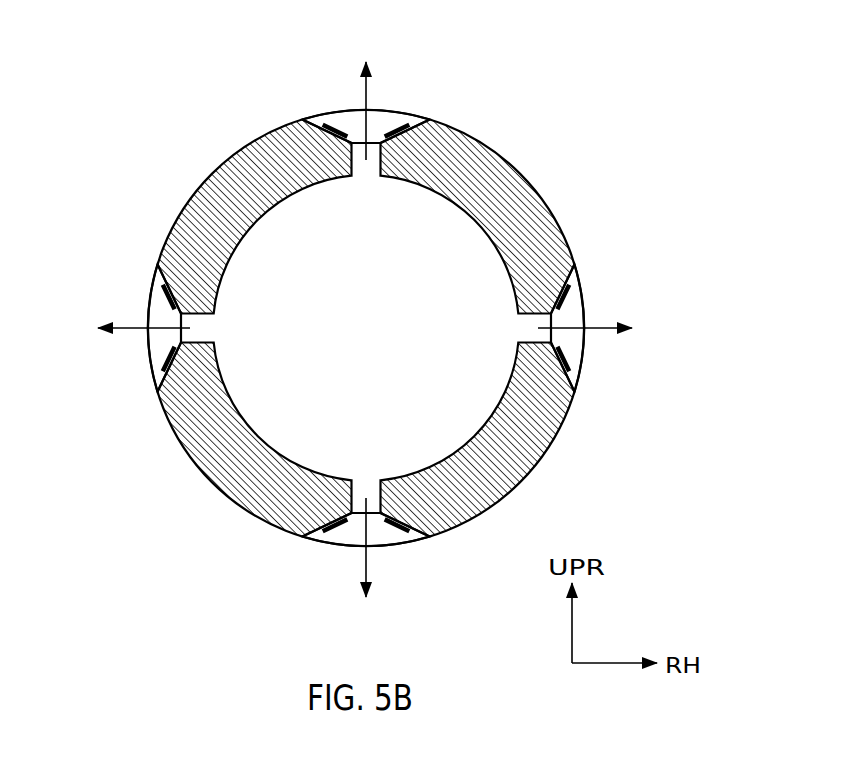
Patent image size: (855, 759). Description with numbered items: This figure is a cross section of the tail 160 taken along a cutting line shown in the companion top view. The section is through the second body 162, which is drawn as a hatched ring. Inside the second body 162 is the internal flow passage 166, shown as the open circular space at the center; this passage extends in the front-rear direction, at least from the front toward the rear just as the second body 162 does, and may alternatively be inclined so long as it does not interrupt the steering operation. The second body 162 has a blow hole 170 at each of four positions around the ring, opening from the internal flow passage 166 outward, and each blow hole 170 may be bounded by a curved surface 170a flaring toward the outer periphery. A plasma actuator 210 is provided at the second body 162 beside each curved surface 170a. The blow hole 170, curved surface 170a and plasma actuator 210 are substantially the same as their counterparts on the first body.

The tail 160 is at (500, 157).
The second body 162 is at (537, 195).
The internal flow passage 166 is at (366, 328).
The blow hole 170 is at (361, 178).
The curved surface 170a is at (308, 122).
The plasma actuator 210 is at (338, 132).